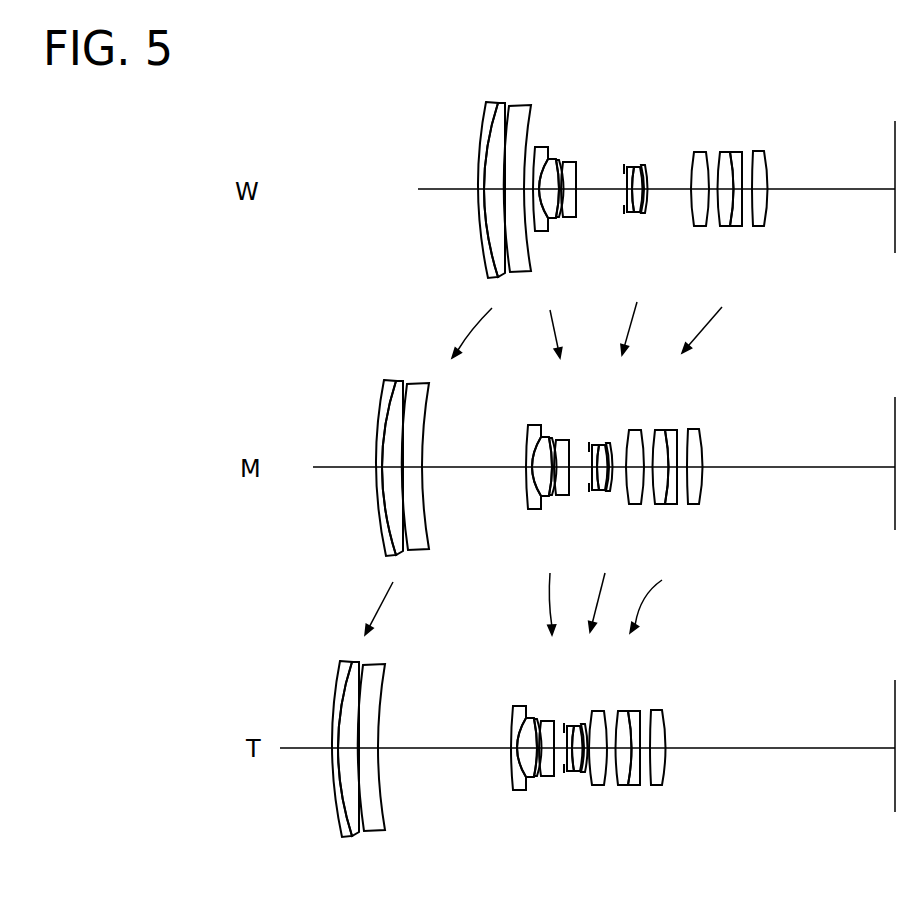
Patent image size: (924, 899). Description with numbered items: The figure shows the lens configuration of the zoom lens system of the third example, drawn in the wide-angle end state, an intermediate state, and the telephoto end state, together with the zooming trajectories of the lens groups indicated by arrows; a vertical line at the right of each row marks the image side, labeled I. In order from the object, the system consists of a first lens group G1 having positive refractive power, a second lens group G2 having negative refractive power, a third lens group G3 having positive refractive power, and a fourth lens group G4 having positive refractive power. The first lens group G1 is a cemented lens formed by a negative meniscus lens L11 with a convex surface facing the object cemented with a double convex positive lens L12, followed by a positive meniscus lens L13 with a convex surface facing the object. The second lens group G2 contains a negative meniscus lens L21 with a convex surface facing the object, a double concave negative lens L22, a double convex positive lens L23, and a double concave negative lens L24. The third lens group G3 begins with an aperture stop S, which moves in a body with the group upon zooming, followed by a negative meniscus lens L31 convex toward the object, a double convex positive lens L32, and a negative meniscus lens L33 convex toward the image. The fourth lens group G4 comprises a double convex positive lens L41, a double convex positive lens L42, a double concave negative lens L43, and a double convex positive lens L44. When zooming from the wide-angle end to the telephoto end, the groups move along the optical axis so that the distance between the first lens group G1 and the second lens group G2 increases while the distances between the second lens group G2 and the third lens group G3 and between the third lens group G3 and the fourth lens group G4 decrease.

The first lens group G1 is at (535, 282).
The negative meniscus lens L11 is at (487, 102).
The double convex positive lens L12 is at (502, 100).
The positive meniscus lens L13 is at (528, 106).
The second lens group G2 is at (581, 237).
The negative meniscus lens L21 is at (545, 146).
The double concave negative lens L22 is at (555, 158).
The double convex positive lens L23 is at (568, 158).
The double concave negative lens L24 is at (577, 161).
The aperture stop S is at (624, 166).
The third lens group G3 is at (649, 218).
The negative meniscus lens L31 is at (630, 165).
The double convex positive lens L32 is at (642, 166).
The negative meniscus lens L33 is at (648, 166).
The fourth lens group G4 is at (770, 230).
The double convex positive lens L41 is at (700, 152).
The double convex positive lens L42 is at (721, 152).
The double concave negative lens L43 is at (740, 152).
The double convex positive lens L44 is at (762, 152).
The image plane I is at (893, 160).